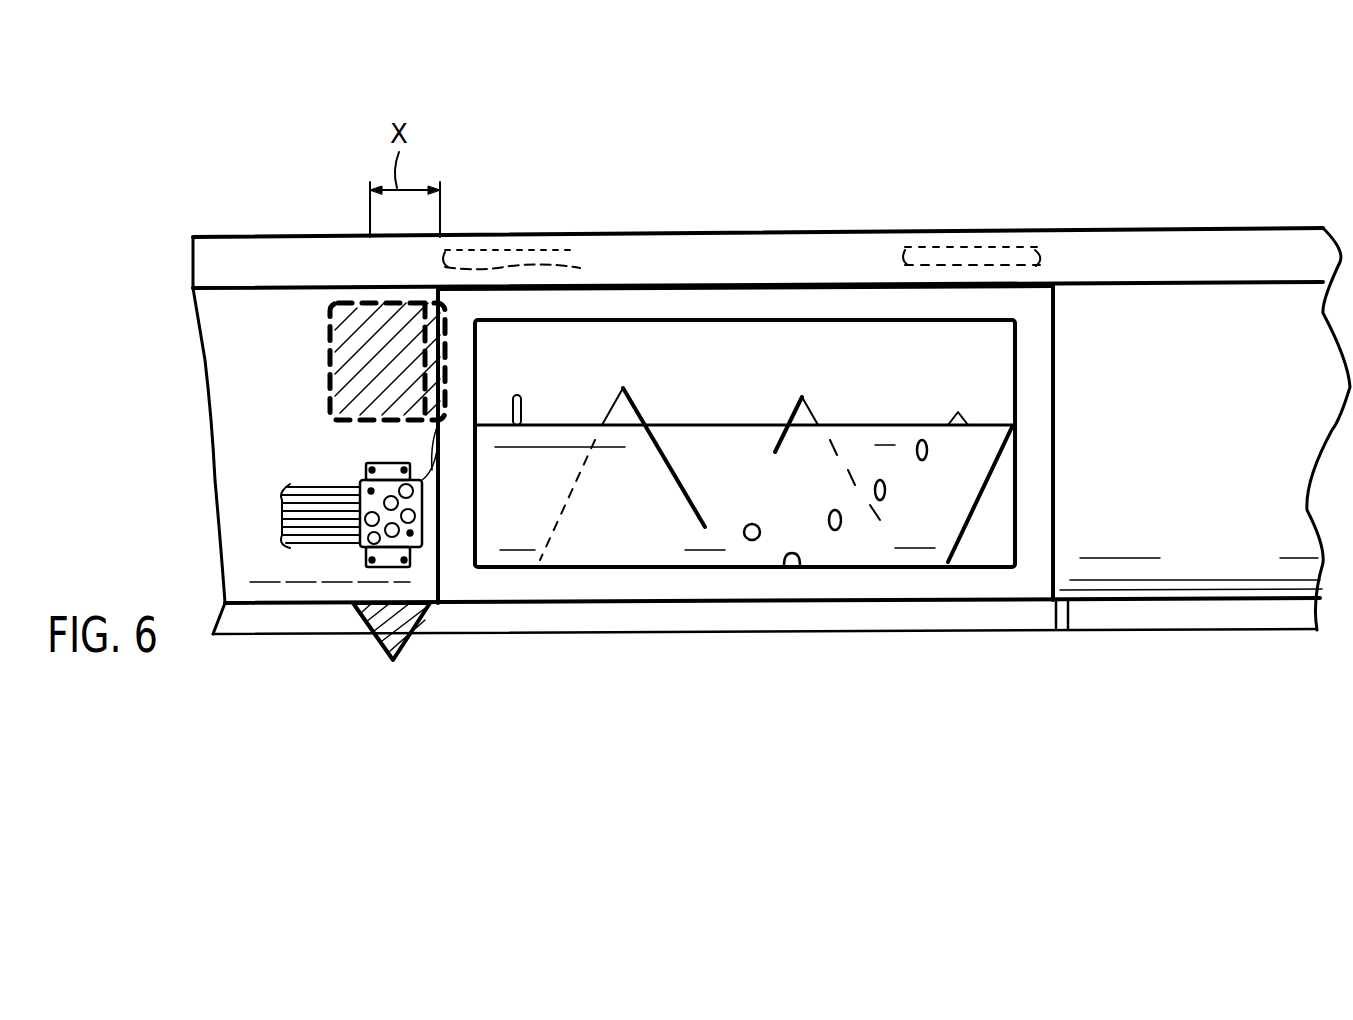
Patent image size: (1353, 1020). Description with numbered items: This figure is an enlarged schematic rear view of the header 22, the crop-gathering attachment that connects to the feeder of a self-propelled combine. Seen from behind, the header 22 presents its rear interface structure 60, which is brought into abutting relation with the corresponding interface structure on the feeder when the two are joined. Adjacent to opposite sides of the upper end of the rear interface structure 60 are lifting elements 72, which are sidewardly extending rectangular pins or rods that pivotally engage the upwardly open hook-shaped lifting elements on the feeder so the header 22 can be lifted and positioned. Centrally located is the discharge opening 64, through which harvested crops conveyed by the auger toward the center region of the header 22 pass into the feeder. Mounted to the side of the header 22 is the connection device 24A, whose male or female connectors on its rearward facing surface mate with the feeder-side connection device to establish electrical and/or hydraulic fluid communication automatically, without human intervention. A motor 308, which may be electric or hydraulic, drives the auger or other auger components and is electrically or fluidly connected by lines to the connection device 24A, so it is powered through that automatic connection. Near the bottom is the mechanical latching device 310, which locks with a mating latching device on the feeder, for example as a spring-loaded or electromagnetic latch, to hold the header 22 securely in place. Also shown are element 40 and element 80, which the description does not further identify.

The header 22 is at (1243, 228).
The connection device 24A is at (357, 545).
The cable 40 is at (318, 500).
The rear interface structure 60 is at (1053, 382).
The discharge opening 64 is at (825, 352).
The lifting elements 72 is at (482, 247).
The clip 80 is at (1068, 612).
The motor 308 is at (340, 310).
The mechanical latching device 310 is at (400, 648).